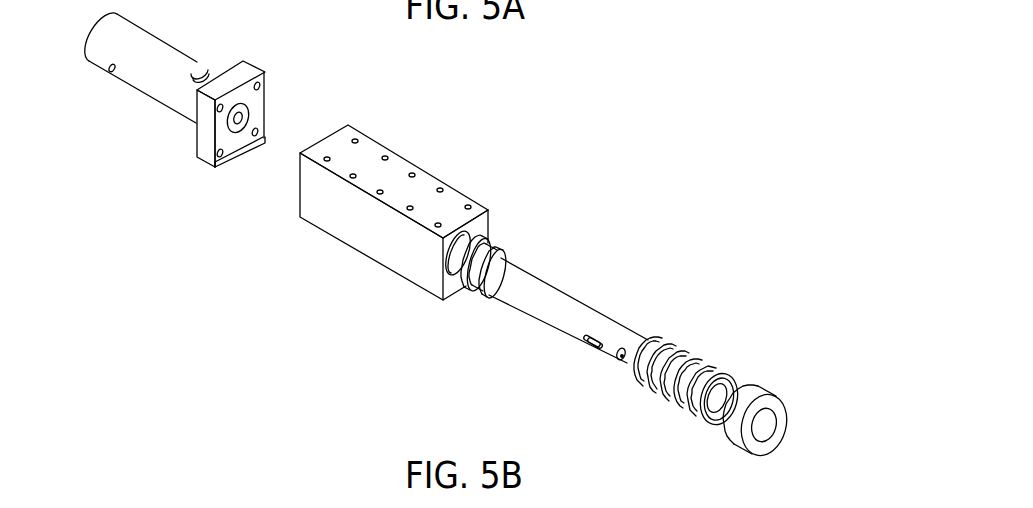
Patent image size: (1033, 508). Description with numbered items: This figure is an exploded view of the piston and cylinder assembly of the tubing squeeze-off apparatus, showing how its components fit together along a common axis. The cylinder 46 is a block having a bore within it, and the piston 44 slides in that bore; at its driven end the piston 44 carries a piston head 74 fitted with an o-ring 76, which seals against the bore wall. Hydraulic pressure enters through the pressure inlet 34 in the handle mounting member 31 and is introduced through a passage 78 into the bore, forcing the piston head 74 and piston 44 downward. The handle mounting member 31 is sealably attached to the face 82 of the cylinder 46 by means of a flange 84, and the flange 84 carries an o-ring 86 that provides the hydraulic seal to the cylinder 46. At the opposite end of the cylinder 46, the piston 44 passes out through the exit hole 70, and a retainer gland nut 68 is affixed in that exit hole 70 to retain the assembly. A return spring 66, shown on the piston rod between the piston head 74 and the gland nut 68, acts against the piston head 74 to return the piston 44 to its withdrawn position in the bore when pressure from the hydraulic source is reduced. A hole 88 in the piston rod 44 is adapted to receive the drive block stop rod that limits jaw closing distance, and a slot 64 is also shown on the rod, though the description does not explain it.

The handle mounting member 31 is at (185, 61).
The pressure inlet 34 is at (237, 52).
The piston 44 is at (610, 317).
The cylinder 46 is at (393, 217).
The slot 64 is at (557, 363).
The return spring 66 is at (707, 351).
The retainer gland nut 68 is at (781, 403).
The exit hole 70 is at (419, 281).
The piston head 74 is at (493, 268).
The o-ring 76 is at (457, 352).
The passage 78 is at (281, 100).
The face 82 is at (392, 168).
The flange 84 is at (224, 152).
The o-ring 86 is at (187, 190).
The hole 88 is at (583, 387).